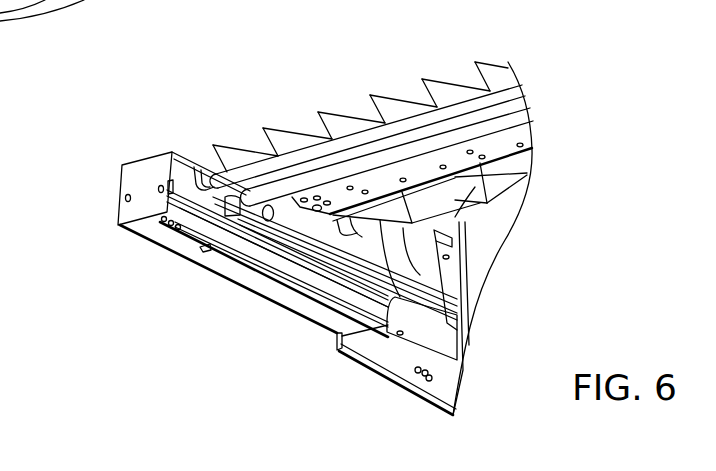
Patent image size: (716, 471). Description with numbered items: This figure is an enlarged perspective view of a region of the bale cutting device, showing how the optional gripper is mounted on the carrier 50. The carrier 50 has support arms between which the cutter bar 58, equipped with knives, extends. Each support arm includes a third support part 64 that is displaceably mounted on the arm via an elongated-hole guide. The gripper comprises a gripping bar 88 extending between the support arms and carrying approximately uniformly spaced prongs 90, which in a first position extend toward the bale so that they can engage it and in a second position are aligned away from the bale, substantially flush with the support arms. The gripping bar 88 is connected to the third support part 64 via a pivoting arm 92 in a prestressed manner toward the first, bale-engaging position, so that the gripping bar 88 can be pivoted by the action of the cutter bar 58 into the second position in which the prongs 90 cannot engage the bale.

The carrier 50 is at (116, 166).
The cutter bar 58 is at (408, 197).
The third support part 64 is at (180, 193).
The gripping bar 88 is at (300, 158).
The prongs 90 is at (453, 90).
The pivoting arm 92 is at (207, 196).